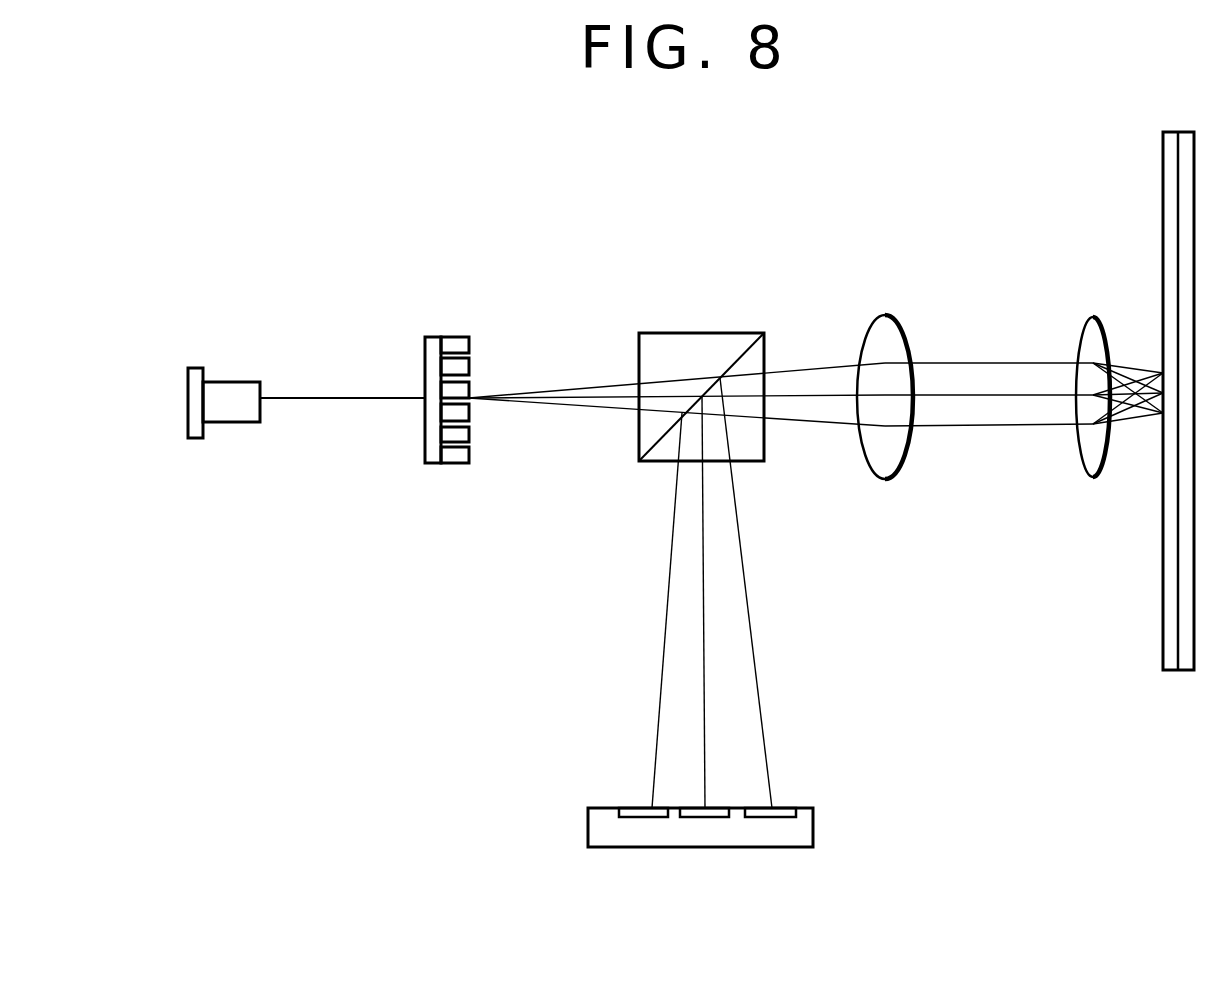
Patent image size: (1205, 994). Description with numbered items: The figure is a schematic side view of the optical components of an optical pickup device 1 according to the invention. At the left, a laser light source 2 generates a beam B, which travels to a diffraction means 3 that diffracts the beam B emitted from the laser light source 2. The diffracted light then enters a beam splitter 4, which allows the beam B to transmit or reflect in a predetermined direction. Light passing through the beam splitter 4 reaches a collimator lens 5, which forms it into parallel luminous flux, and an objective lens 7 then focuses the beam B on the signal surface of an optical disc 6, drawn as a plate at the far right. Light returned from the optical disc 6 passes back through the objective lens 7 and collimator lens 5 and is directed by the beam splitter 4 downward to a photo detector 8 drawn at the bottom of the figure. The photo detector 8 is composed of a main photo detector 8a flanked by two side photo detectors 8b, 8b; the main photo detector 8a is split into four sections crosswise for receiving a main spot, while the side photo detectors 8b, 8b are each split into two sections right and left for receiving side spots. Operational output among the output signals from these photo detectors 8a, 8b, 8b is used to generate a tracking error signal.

The optical pickup device 1 is at (777, 245).
The laser light source 2 is at (232, 382).
The beam B is at (328, 398).
The diffraction means 3 is at (450, 337).
The beam splitter 4 is at (693, 333).
The collimator lens 5 is at (886, 317).
The optical disc 6 is at (1163, 609).
The objective lens 7 is at (1095, 317).
The photo detector 8 is at (733, 796).
The main photo detector 8a is at (718, 808).
The side photo detectors 8b is at (630, 808).